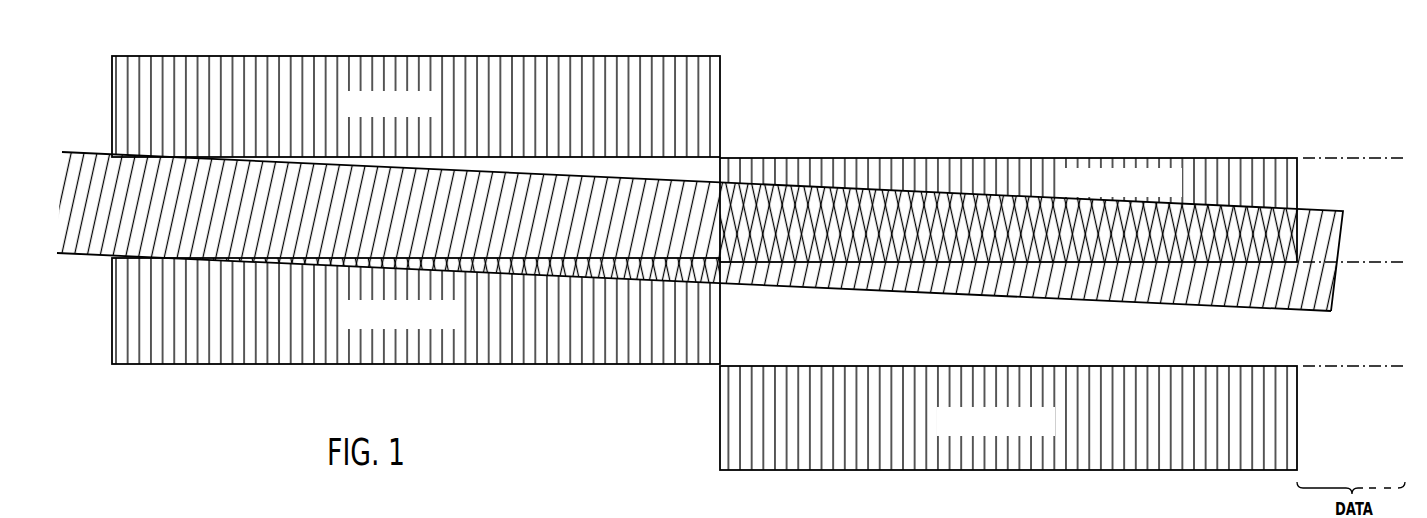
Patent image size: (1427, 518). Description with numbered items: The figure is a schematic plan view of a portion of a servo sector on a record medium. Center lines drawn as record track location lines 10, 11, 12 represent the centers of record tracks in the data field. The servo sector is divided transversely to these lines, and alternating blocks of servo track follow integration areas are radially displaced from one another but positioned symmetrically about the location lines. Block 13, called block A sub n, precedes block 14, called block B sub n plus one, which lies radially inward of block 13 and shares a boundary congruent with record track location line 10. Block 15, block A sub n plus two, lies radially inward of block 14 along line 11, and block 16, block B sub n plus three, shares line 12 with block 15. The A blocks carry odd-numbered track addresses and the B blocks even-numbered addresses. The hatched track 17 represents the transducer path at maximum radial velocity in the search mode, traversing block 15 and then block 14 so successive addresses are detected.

The record track location line 10 is at (1346, 158).
The record track location line 11 is at (1390, 262).
The record track location line 12 is at (1356, 366).
The block A sub n 13 is at (679, 56).
The block B sub n+1 14 is at (1238, 158).
The block A sub n+2 15 is at (639, 366).
The block B sub n+3 16 is at (1200, 366).
The hatched track 17 is at (1333, 210).